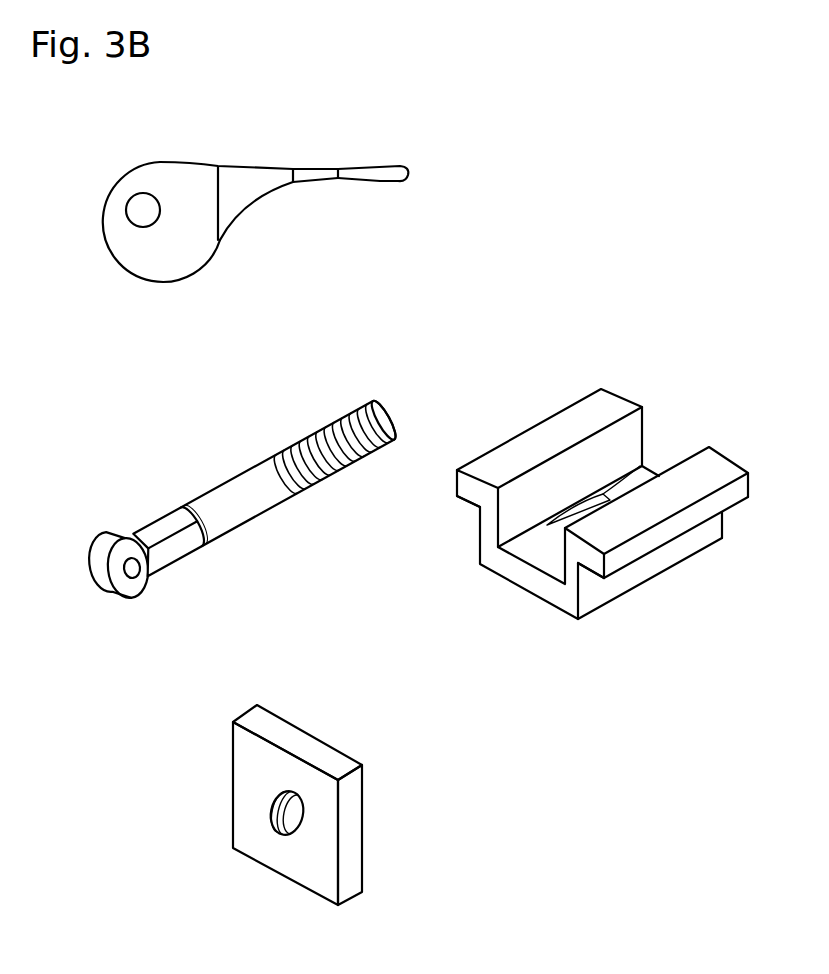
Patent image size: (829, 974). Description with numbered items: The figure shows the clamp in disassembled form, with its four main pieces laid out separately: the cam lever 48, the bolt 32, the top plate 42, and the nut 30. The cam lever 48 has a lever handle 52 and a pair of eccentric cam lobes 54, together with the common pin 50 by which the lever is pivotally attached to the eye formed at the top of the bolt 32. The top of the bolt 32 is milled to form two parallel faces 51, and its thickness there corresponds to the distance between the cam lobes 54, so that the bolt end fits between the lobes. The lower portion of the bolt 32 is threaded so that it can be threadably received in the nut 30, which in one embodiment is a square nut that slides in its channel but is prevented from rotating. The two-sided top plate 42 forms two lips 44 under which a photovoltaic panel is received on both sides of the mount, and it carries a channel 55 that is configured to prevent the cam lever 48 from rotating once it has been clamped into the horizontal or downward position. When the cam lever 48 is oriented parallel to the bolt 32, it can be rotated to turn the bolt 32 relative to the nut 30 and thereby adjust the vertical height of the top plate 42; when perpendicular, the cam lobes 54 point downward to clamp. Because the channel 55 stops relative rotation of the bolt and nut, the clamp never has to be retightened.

The nut 30 is at (322, 740).
The bolt 32 is at (242, 487).
The top plate 42 is at (569, 472).
The lips 44 is at (465, 500).
The cam lever 48 is at (251, 201).
The common pin 50 is at (140, 205).
The parallel faces 51 is at (150, 530).
The lever handle 52 is at (378, 168).
The eccentric cam lobes 54 is at (135, 256).
The channel 55 is at (643, 468).